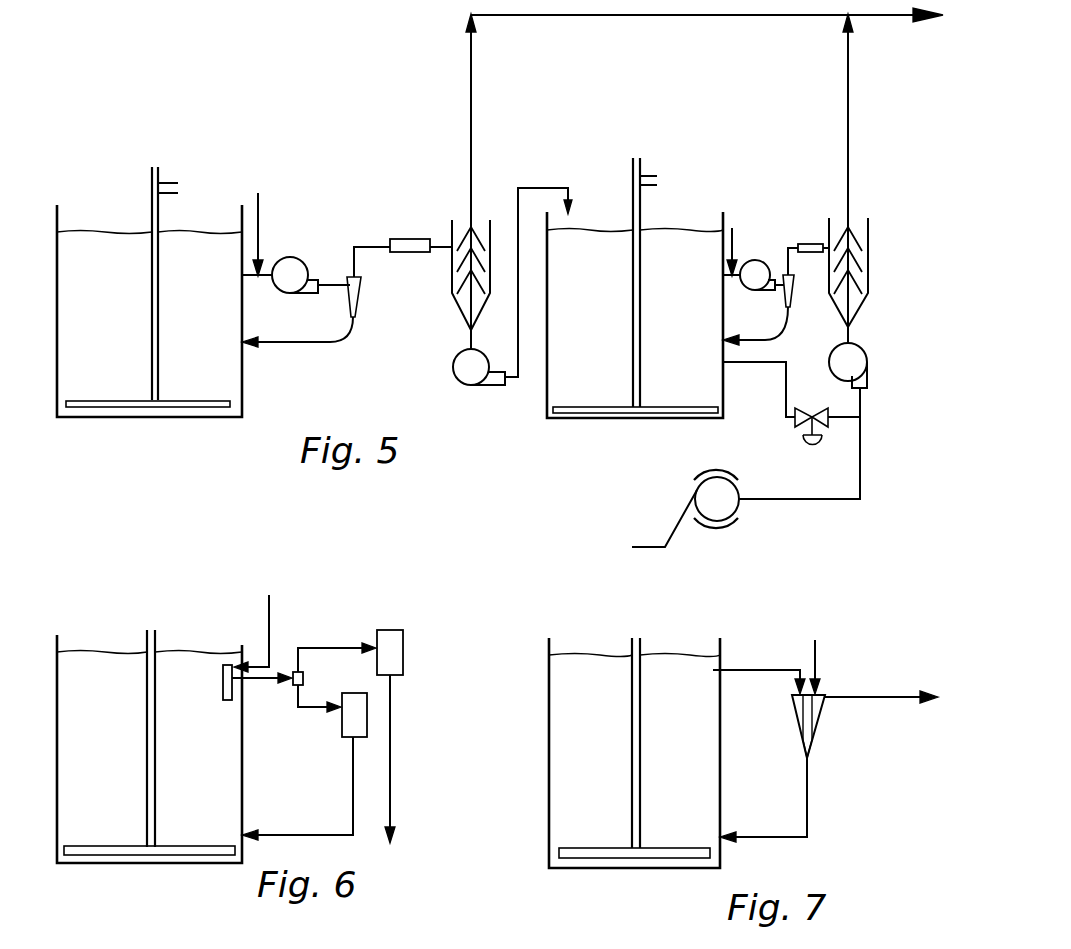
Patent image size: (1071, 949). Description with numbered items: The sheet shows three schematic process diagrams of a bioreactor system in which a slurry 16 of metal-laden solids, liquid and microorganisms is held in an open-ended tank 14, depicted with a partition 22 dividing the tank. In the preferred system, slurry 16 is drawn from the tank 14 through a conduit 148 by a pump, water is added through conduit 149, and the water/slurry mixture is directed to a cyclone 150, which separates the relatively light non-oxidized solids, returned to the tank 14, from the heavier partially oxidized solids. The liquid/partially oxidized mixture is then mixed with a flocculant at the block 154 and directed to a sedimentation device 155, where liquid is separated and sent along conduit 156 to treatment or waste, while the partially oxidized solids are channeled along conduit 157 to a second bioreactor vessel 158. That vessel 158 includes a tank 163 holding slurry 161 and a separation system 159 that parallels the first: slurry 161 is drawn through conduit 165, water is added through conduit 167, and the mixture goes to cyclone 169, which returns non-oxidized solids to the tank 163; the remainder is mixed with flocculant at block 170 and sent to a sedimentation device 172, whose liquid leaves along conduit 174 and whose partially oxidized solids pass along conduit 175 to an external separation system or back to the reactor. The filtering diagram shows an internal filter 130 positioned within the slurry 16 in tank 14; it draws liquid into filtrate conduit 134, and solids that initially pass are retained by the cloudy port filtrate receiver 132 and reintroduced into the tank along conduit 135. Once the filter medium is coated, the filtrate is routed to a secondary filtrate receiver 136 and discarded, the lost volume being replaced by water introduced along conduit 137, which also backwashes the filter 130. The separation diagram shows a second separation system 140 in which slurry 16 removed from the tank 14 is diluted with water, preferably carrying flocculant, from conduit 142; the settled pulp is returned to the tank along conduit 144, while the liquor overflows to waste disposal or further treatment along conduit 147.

In FIG. 5, the tank 14 is at (57, 305).
In FIG. 6, the tank 14 is at (57, 715).
In FIG. 7, the tank 14 is at (548, 716).
In FIG. 5, the slurry 16 is at (188, 281).
In FIG. 6, the slurry 16 is at (191, 743).
In FIG. 7, the slurry 16 is at (603, 711).
In FIG. 6, the partition 22 is at (146, 642).
In FIG. 6, the internal filter 130 is at (216, 678).
In FIG. 6, the cloudy port filtrate receiver 132 is at (357, 695).
In FIG. 6, the filtrate conduit 134 is at (270, 692).
In FIG. 6, the conduit 135 is at (302, 835).
In FIG. 6, the secondary filtrate receiver 136 is at (398, 632).
In FIG. 6, the conduit 137 is at (270, 612).
In FIG. 7, the second separation system 140 is at (790, 728).
In FIG. 7, the conduit 142 is at (818, 660).
In FIG. 7, the conduit 144 is at (776, 837).
In FIG. 7, the conduit 147 is at (848, 695).
In FIG. 5, the conduit 148 is at (256, 277).
In FIG. 5, the conduit 149 is at (262, 212).
In FIG. 5, the cyclone 150 is at (358, 288).
In FIG. 5, the flocculant mixing block 154 is at (410, 240).
In FIG. 5, the sedimentation device 155 is at (455, 312).
In FIG. 5, the conduit 156 is at (472, 88).
In FIG. 5, the conduit 157 is at (545, 188).
In FIG. 5, the second bioreactor vessel 158 is at (548, 345).
In FIG. 5, the separation system 159 is at (792, 248).
In FIG. 5, the slurry 161 is at (703, 348).
In FIG. 5, the tank 163 is at (640, 414).
In FIG. 5, the conduit 165 is at (740, 278).
In FIG. 5, the conduit 167 is at (735, 230).
In FIG. 5, the cyclone 169 is at (796, 280).
In FIG. 5, the flocculant mixing block 170 is at (806, 243).
In FIG. 5, the sedimentation device 172 is at (870, 270).
In FIG. 5, the conduit 174 is at (850, 72).
In FIG. 5, the conduit 175 is at (862, 398).